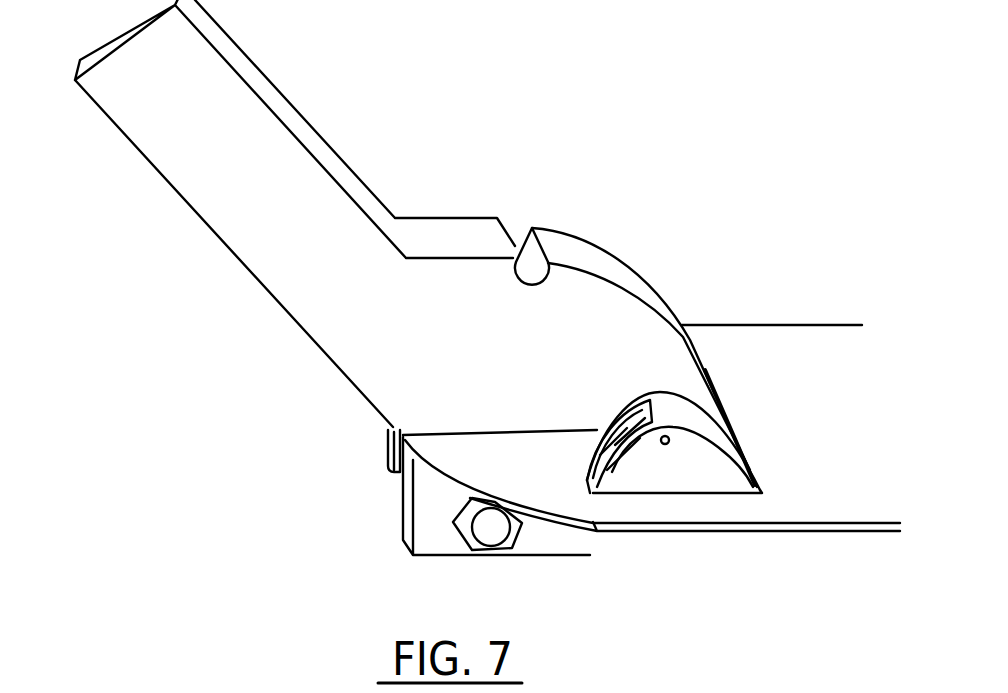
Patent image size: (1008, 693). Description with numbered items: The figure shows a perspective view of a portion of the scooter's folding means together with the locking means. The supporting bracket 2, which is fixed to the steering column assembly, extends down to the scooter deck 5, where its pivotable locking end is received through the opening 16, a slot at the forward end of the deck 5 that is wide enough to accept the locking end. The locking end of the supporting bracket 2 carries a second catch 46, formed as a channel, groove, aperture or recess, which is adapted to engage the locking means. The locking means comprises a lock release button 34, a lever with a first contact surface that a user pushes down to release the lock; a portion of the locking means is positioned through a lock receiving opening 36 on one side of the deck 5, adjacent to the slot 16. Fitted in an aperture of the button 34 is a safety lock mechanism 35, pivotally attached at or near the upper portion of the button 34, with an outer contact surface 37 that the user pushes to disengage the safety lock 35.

The supporting bracket 2 is at (260, 170).
The second catch 46 is at (520, 230).
The scooter deck 5 is at (767, 355).
The opening 16 is at (403, 488).
The safety lock mechanism 35 is at (595, 447).
The outer contact surface 37 is at (617, 490).
The lock release button 34 is at (665, 465).
The lock receiving opening 36 is at (763, 475).